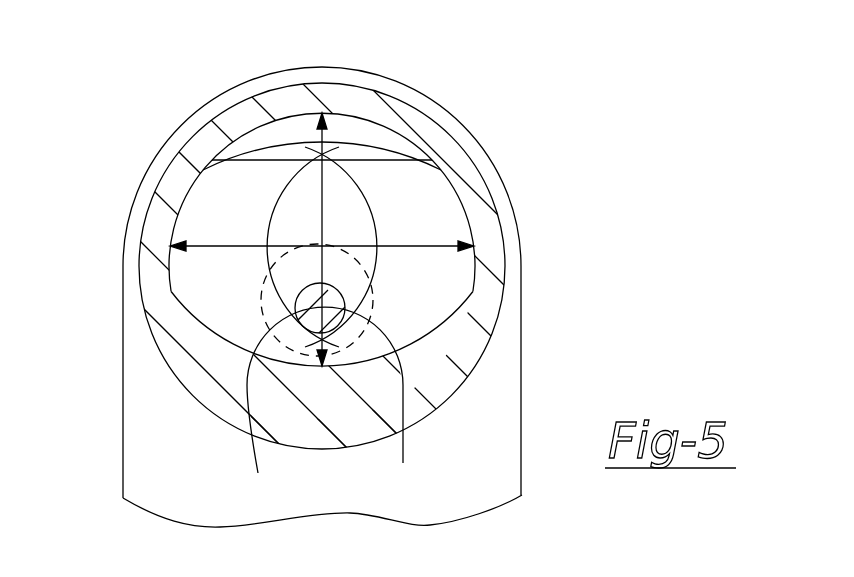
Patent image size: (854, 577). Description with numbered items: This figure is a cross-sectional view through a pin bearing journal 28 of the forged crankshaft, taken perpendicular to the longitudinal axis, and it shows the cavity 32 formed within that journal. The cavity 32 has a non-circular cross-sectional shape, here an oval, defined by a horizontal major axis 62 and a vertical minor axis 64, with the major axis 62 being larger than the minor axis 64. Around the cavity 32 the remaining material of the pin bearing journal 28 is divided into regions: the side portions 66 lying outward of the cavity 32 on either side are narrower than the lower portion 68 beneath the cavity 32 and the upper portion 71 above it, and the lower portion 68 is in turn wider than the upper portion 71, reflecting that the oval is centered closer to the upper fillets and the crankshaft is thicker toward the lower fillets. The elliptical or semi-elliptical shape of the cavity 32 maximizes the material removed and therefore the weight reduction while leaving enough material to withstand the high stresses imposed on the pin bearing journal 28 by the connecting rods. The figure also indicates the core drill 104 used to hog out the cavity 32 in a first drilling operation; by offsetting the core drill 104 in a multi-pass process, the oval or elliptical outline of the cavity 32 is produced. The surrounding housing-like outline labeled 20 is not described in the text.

The housing 20 is at (483, 173).
The pin bearing journal 28 is at (428, 113).
The cavity 32 is at (445, 230).
The horizontal major axis 62 is at (212, 245).
The vertical minor axis 64 is at (327, 207).
The side portions 66 is at (158, 297).
The lower portion 68 is at (300, 423).
The upper portion 71 is at (338, 98).
The core drill 104 is at (258, 468).